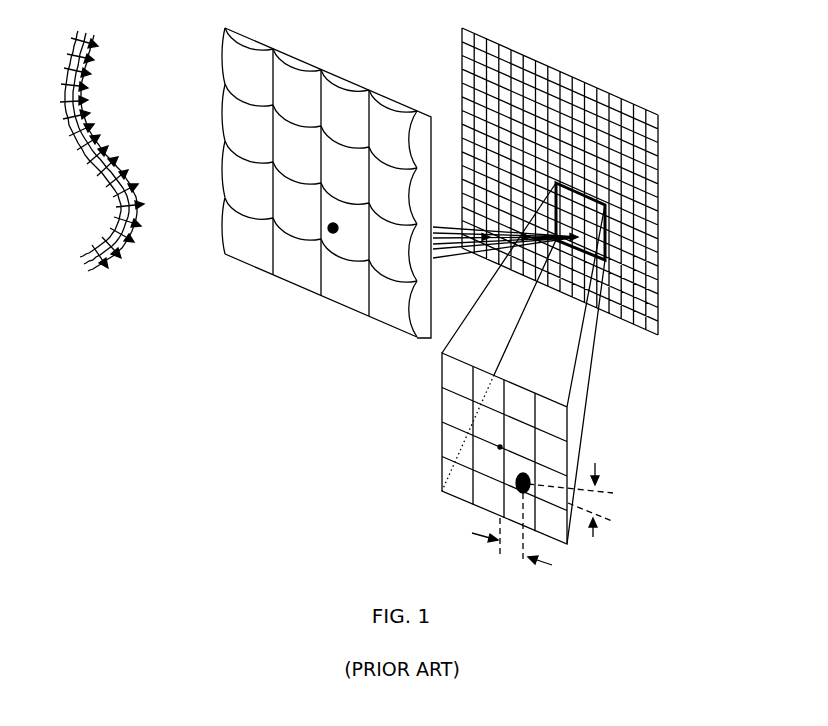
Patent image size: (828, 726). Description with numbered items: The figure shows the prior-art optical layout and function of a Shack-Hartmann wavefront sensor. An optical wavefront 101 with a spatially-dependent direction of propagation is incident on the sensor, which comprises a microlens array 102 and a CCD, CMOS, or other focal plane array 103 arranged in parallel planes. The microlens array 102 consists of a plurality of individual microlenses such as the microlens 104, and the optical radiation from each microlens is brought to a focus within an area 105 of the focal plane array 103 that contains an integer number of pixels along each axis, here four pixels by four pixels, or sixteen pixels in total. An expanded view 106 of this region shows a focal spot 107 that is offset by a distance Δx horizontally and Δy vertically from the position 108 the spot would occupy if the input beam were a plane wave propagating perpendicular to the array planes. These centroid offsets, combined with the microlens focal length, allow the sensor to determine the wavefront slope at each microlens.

The optical wavefront 101 is at (65, 283).
The microlens array 102 is at (357, 76).
The focal plane array 103 is at (585, 83).
The microlens 104 is at (334, 233).
The area of the FPA 105 is at (608, 237).
The expanded view 106 is at (438, 402).
The focal spot 107 is at (525, 467).
The position 108 is at (494, 447).